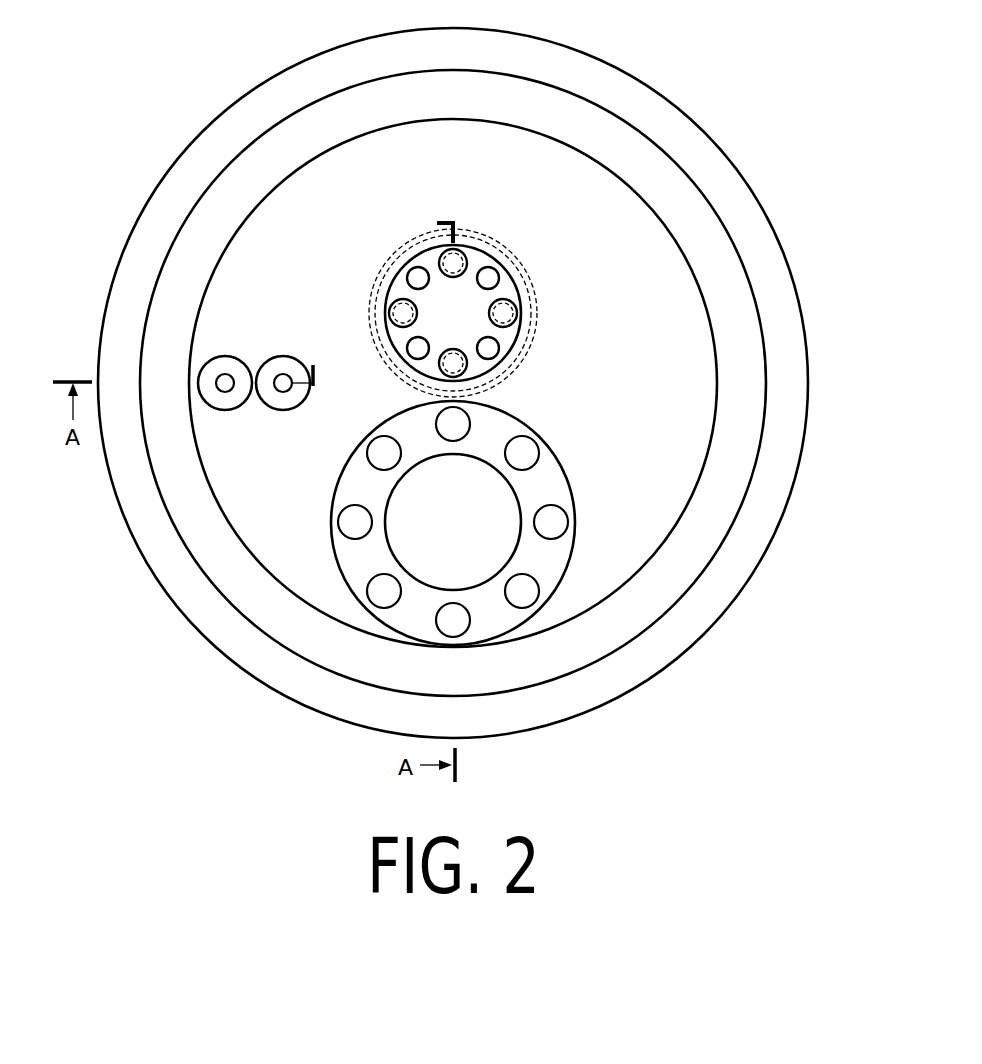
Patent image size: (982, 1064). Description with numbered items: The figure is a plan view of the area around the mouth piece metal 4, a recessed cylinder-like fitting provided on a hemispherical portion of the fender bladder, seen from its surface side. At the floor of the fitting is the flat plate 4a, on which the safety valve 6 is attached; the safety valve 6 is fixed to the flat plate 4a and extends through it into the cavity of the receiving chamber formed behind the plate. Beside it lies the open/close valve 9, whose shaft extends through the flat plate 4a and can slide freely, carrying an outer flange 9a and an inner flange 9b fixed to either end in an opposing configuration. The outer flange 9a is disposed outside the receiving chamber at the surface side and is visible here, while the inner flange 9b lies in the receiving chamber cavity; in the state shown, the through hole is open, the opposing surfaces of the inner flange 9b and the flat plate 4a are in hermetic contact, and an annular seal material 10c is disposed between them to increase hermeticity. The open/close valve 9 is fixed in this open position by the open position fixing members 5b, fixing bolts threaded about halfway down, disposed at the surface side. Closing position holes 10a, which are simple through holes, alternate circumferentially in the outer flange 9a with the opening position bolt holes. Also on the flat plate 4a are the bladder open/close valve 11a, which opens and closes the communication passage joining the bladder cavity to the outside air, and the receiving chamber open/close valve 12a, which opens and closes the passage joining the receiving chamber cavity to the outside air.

The mouth piece metal 4 is at (758, 197).
The flat plate 4a is at (290, 560).
The safety valve 6 is at (506, 508).
The open/close valve 9 is at (488, 249).
The outer flange 9a is at (503, 292).
The inner flange 9b is at (536, 338).
The open position fixing members 5b is at (440, 256).
The closing position holes 10a is at (412, 278).
The seal material 10c is at (472, 228).
The bladder open/close valve 11a is at (225, 397).
The receiving chamber open/close valve 12a is at (277, 366).